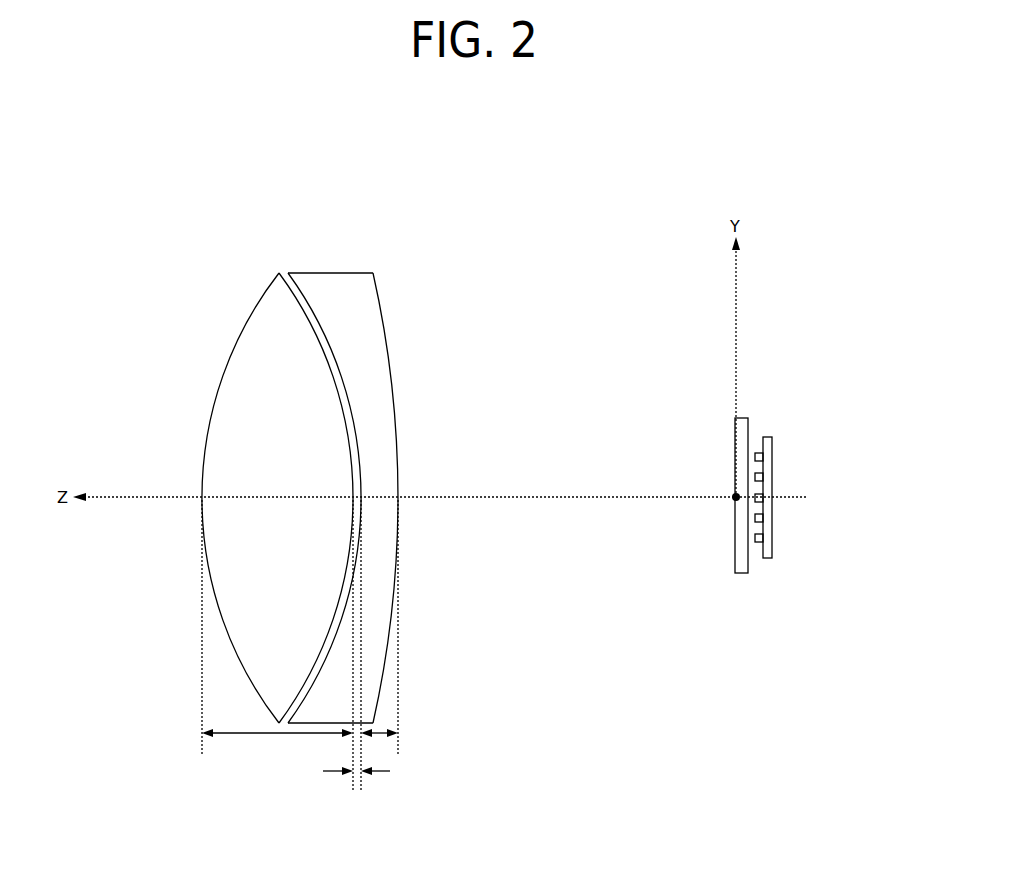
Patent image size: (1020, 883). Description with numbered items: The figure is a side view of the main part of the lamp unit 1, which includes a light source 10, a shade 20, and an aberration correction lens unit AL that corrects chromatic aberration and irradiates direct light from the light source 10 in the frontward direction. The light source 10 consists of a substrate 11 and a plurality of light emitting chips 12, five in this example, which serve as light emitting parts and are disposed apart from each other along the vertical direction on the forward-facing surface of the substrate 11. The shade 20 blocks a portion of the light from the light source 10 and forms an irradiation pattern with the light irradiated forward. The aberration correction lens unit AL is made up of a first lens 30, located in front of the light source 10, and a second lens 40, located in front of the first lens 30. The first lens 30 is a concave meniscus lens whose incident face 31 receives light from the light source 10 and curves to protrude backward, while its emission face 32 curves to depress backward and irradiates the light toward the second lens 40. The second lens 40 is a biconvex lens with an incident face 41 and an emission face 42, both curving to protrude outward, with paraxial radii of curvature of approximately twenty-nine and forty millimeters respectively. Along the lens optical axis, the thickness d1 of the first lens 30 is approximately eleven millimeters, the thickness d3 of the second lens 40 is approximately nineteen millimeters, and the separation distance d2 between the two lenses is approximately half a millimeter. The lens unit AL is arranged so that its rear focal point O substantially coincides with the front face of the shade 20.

The lamp unit 1 is at (533, 175).
The light source 10 is at (821, 495).
The substrate 11 is at (765, 492).
The light emitting chips 12 is at (763, 475).
The shade 20 is at (748, 561).
The first lens 30 is at (372, 498).
The incident face 31 is at (381, 312).
The emission face 32 is at (344, 401).
The second lens 40 is at (299, 498).
The incident face 41 is at (312, 327).
The emission face 42 is at (206, 442).
The aberration correction lens unit AL is at (458, 553).
The rear focal point O is at (733, 495).
The thickness of the first lens d1 is at (379, 645).
The separation distance d2 is at (356, 791).
The thickness of the second lens d3 is at (277, 645).